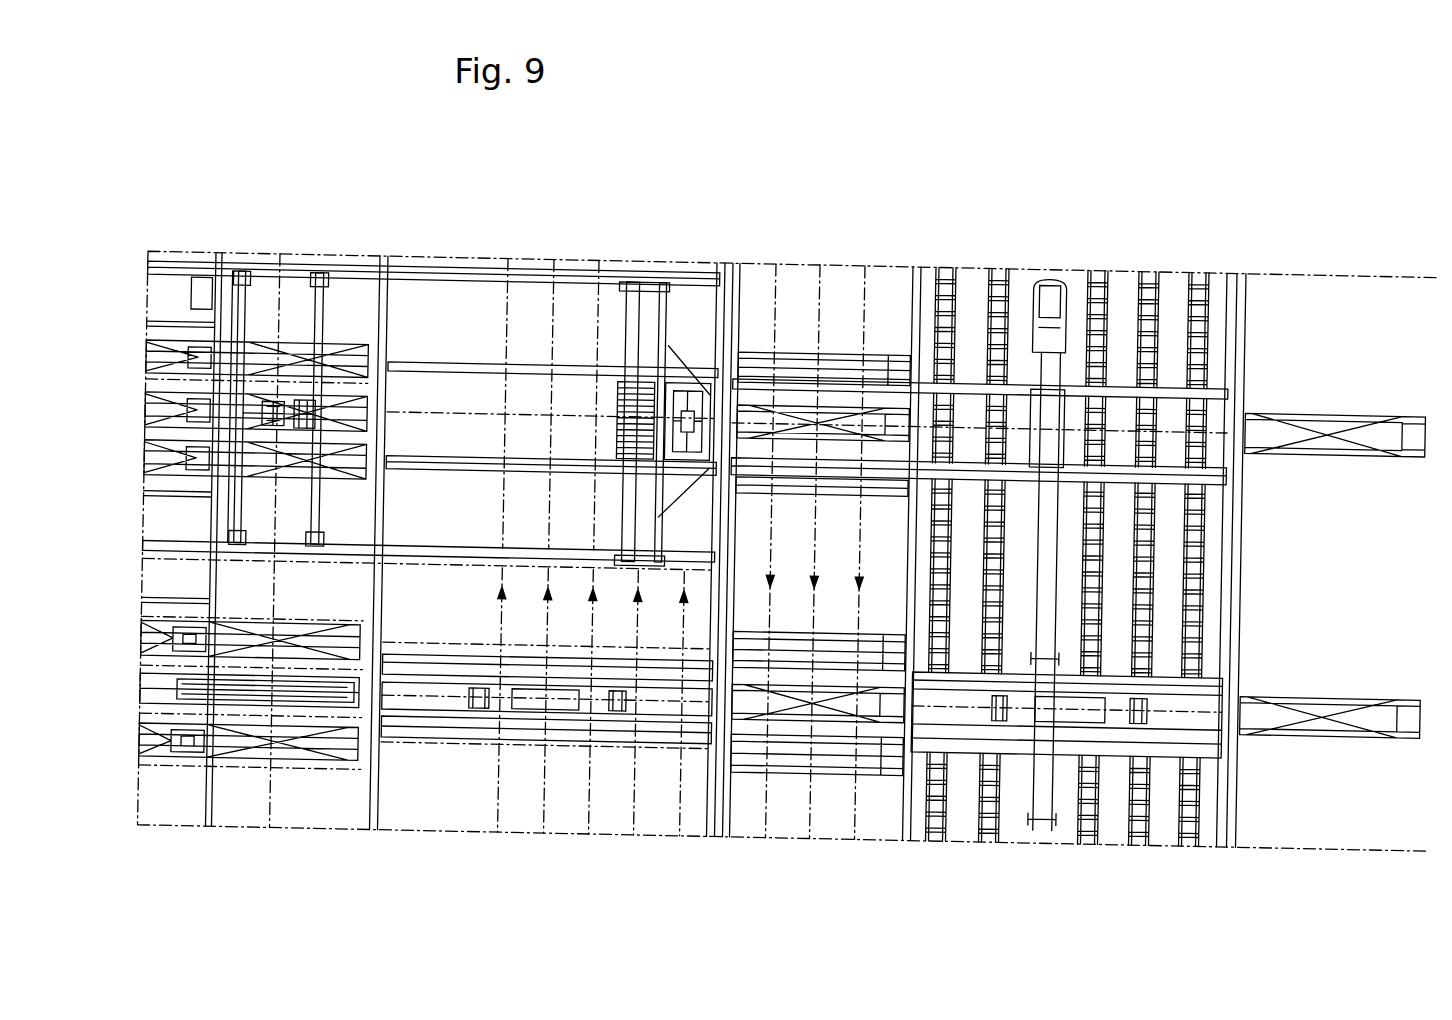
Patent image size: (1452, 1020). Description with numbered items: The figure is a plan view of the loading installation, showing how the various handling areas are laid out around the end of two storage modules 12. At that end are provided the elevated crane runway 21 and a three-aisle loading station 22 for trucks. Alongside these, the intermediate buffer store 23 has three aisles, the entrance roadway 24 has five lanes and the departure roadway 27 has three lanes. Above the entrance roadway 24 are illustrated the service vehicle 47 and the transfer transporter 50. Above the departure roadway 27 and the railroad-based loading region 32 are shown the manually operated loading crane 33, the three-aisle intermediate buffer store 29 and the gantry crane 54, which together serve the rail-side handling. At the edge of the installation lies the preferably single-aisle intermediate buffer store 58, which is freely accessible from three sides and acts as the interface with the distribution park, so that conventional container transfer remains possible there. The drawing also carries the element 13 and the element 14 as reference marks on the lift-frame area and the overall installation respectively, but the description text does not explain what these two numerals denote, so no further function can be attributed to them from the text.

The storage modules 12 is at (143, 832).
The lifting device 13 is at (322, 275).
The conveying installation 14 is at (704, 158).
The elevated crane runway 21 is at (188, 272).
The three-aisle loading station 22 is at (173, 780).
The intermediate buffer store 23 is at (294, 770).
The entrance roadway 24 is at (600, 840).
The departure roadway 27 is at (826, 845).
The three-aisle intermediate buffer store 29 is at (833, 355).
The railroad-based loading region 32 is at (1018, 845).
The manually operated loading crane 33 is at (1122, 380).
The service vehicle 47 is at (538, 262).
The transfer transporter 50 is at (445, 745).
The gantry crane 54 is at (1121, 755).
The single-aisle intermediate buffer store 58 is at (1410, 735).